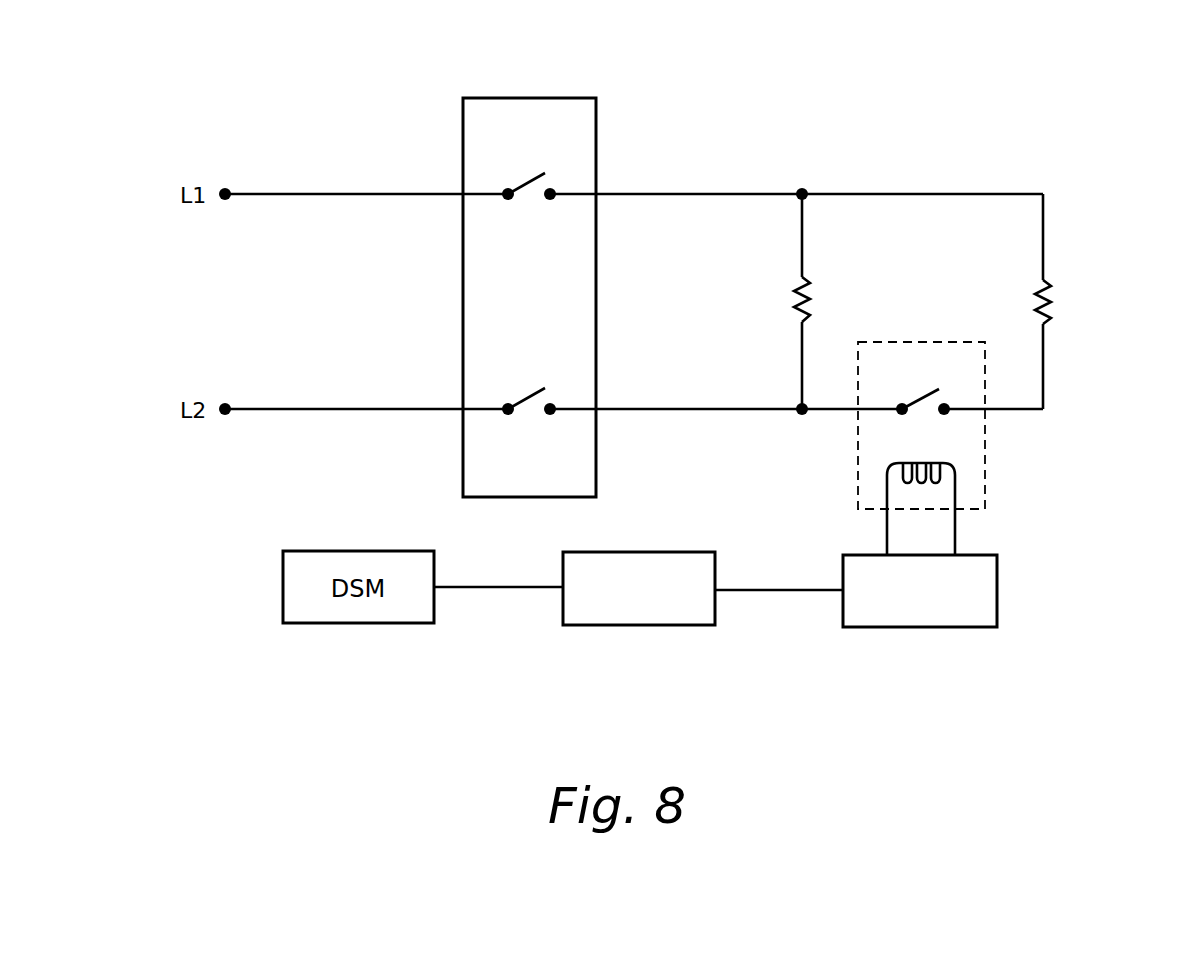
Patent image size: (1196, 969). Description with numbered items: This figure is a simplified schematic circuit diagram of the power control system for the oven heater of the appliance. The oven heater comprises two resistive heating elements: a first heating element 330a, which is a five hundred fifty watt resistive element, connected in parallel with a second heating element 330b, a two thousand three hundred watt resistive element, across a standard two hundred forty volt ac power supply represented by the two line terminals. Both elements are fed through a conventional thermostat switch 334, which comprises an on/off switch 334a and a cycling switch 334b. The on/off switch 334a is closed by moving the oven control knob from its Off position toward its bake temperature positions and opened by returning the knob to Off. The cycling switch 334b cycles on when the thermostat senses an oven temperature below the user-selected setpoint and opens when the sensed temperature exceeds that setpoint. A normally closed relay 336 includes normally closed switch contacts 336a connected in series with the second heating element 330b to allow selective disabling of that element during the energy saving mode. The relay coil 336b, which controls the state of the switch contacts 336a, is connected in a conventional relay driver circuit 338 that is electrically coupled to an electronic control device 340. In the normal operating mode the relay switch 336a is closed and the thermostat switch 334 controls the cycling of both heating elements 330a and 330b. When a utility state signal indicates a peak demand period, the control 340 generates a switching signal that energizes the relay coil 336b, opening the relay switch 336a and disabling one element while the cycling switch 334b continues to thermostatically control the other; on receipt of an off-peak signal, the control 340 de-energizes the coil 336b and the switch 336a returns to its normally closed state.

The thermostat switch 334 is at (497, 98).
The on/off switch 334a is at (525, 181).
The cycling switch 334b is at (523, 393).
The first heating element 330a is at (791, 298).
The second heating element 330b is at (1053, 307).
The relay 336 is at (857, 463).
The relay switch contacts 336a is at (918, 401).
The relay coil 336b is at (948, 463).
The relay driver circuit 338 is at (950, 627).
The electronic control device 340 is at (612, 625).